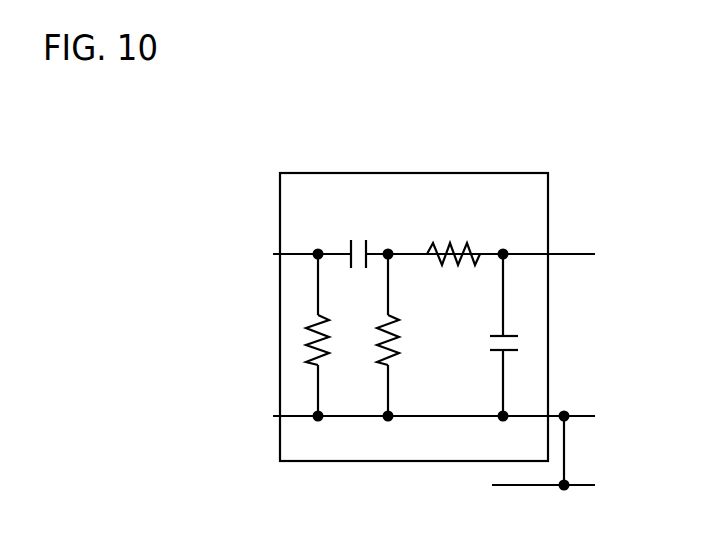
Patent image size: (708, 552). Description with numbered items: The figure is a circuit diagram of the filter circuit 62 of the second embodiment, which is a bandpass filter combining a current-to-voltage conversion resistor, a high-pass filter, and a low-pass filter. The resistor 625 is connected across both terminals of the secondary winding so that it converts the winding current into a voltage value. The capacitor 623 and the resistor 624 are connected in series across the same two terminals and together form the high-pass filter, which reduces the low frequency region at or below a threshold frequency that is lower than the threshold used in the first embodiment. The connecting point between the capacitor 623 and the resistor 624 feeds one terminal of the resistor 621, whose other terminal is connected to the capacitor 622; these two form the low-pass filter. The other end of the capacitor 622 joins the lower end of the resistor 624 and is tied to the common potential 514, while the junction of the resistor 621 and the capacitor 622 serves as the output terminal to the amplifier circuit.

The filter circuit 62 is at (358, 173).
The resistor 621 is at (452, 240).
The capacitor 622 is at (493, 355).
The capacitor 623 is at (358, 242).
The resistor 624 is at (402, 330).
The resistor 625 is at (325, 330).
The common potential 514 is at (528, 487).